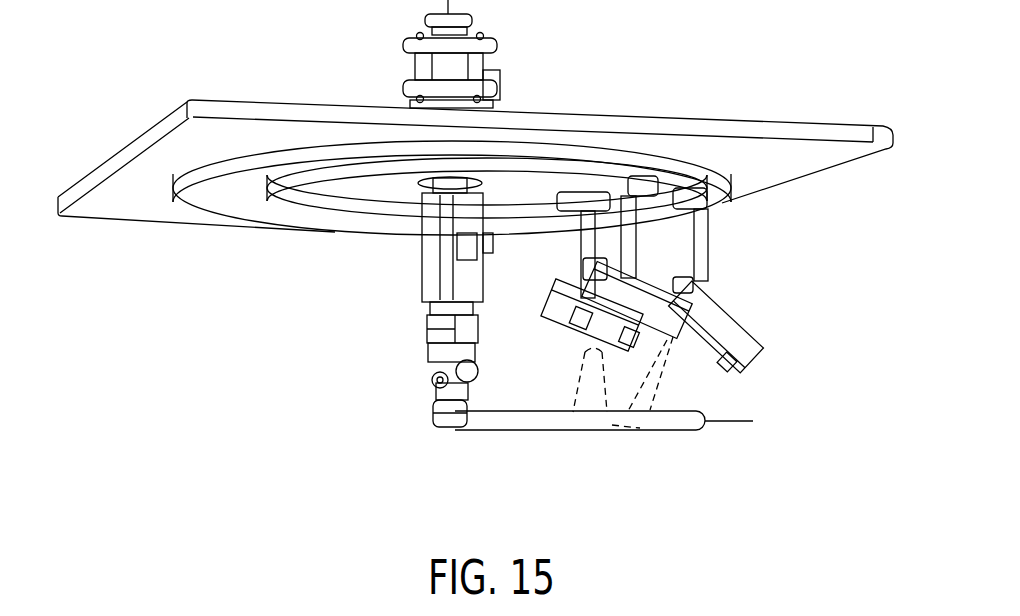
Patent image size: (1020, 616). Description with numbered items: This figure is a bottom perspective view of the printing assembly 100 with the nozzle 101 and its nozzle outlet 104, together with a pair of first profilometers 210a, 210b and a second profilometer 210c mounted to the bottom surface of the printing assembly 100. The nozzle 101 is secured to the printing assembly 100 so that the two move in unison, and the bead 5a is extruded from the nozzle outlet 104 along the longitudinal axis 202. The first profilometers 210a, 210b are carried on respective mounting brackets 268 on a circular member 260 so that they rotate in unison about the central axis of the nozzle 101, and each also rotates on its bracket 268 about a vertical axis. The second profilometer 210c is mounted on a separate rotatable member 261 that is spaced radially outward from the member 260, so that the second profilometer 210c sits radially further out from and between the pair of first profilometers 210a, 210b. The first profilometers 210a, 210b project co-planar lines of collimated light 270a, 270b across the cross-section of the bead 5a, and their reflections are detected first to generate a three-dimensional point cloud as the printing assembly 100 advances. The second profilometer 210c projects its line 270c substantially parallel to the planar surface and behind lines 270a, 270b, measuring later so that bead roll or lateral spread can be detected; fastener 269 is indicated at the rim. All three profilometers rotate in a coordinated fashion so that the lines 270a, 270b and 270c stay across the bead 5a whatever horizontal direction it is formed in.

The printing assembly 100 is at (834, 121).
The nozzle 101 is at (420, 255).
The nozzle outlet 104 is at (432, 405).
The bead 5a is at (510, 431).
The longitudinal axis 202 is at (735, 422).
The first profilometer 210a is at (562, 265).
The first profilometer 210b is at (651, 290).
The second profilometer 210c is at (737, 313).
The circular member 260 is at (303, 168).
The rotatable member 261 is at (710, 167).
The mounting bracket 268 is at (648, 177).
The fastener 269 is at (725, 194).
The line of collimated light 270a is at (600, 433).
The line of collimated light 270b is at (590, 433).
The line of collimated light 270c is at (647, 430).